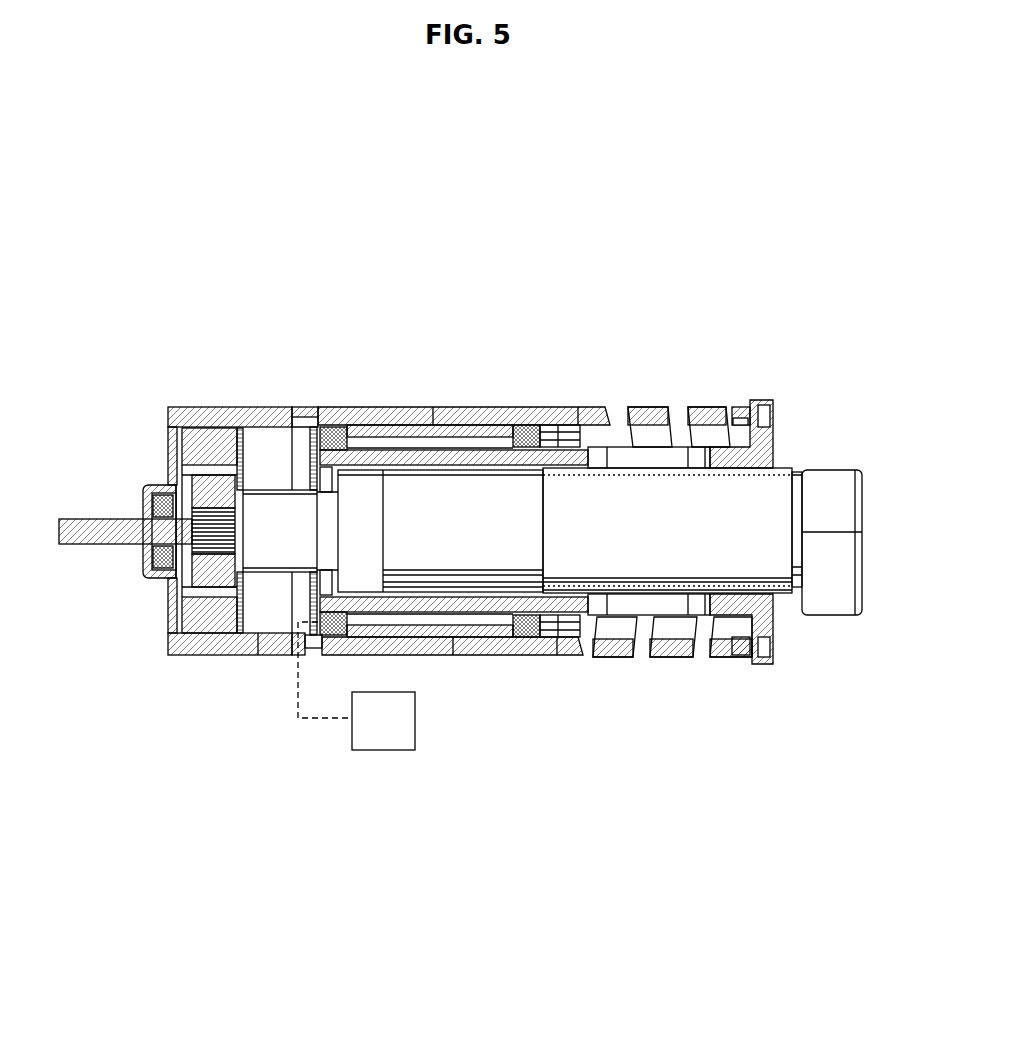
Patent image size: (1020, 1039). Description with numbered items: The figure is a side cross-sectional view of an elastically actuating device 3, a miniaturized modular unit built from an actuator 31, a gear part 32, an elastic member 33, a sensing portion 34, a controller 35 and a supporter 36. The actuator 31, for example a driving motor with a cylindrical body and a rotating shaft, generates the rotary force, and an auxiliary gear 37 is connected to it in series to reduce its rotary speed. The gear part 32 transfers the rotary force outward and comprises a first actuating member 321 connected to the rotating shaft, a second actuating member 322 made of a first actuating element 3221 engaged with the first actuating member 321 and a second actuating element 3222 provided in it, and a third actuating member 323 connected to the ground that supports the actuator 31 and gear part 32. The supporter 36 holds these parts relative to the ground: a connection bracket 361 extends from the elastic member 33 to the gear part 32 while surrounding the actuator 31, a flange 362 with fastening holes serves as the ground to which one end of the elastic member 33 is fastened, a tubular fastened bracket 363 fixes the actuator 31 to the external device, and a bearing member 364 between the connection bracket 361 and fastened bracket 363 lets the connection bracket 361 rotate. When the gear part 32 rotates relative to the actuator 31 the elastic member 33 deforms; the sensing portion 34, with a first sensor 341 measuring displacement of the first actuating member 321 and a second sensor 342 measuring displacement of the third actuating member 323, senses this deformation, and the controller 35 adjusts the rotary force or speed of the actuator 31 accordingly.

The elastically actuating device 3 is at (499, 122).
The gear part 32 is at (322, 275).
The second actuating member 322 is at (352, 335).
The first actuating member 321 is at (217, 517).
The third actuating member 323 is at (243, 420).
The first actuating element 3221 is at (228, 448).
The second actuating element 3222 is at (223, 470).
The bearing member 364 is at (533, 430).
The supporter 36 is at (538, 345).
The connection bracket 361 is at (398, 408).
The fastened bracket 363 is at (440, 457).
The elastic member 33 is at (643, 407).
The flange 362 is at (753, 402).
The auxiliary gear 37 is at (520, 547).
The actuator 31 is at (660, 580).
The second sensor 342 is at (310, 603).
The first sensor 341 is at (831, 617).
The sensing portion 34 is at (788, 792).
The controller 35 is at (373, 750).